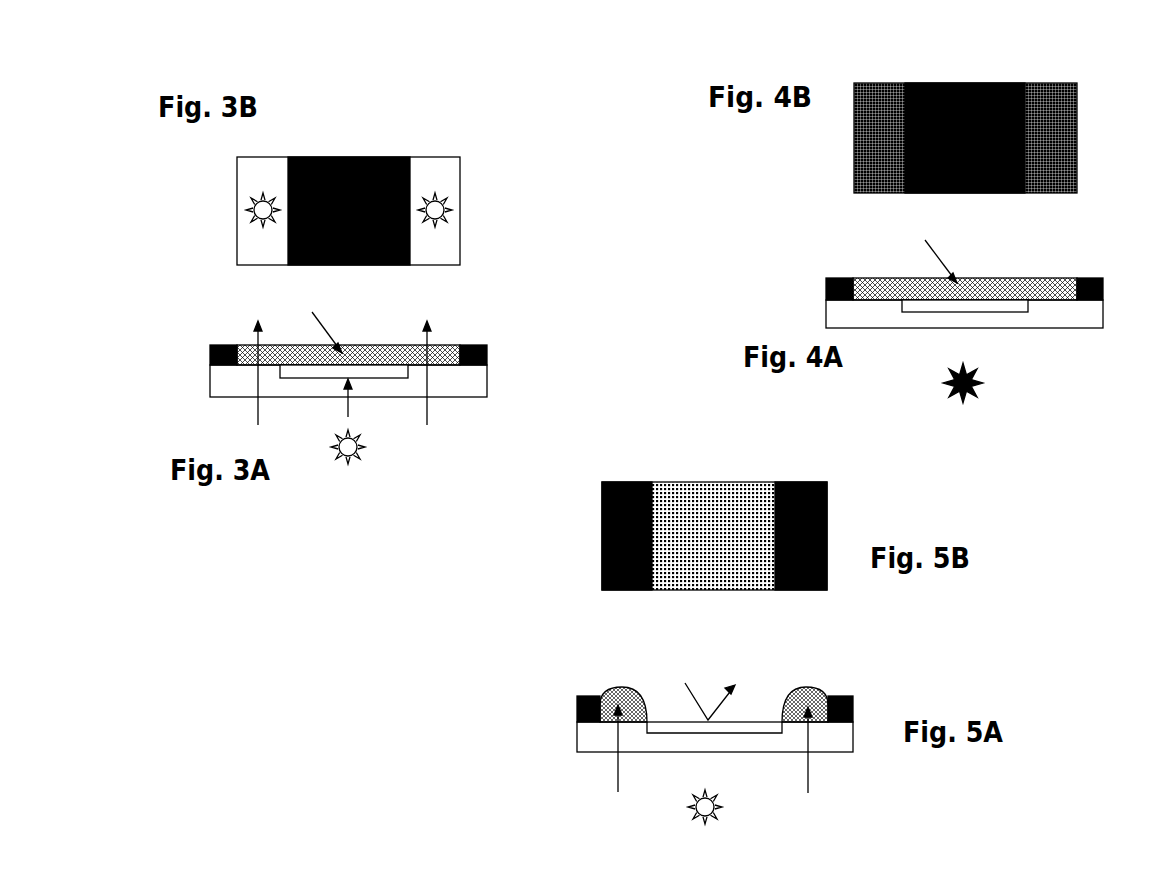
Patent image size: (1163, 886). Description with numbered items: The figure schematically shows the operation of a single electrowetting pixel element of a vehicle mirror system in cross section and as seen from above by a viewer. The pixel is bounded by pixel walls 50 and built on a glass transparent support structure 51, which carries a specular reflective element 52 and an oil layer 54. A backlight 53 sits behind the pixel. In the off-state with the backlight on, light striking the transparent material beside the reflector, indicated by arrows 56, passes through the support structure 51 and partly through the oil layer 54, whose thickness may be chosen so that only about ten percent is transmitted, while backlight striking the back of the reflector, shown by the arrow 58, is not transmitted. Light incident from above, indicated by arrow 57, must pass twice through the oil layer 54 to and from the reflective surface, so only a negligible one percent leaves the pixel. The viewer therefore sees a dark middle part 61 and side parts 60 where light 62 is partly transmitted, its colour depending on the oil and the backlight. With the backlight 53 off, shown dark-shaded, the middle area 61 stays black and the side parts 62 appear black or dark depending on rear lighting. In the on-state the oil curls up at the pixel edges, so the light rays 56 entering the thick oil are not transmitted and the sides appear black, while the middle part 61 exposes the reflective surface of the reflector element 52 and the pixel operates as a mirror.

In FIG. 3A, the pixel walls 50 is at (210, 350).
In FIG. 4A, the pixel walls 50 is at (826, 283).
In FIG. 5A, the pixel walls 50 is at (577, 715).
In FIG. 3A, the transparent support structure 51 is at (210, 386).
In FIG. 4A, the transparent support structure 51 is at (887, 329).
In FIG. 5A, the transparent support structure 51 is at (577, 753).
In FIG. 3A, the reflective element 52 is at (300, 379).
In FIG. 4A, the reflective element 52 is at (1000, 313).
In FIG. 5A, the reflective element 52 is at (714, 727).
In FIG. 3A, the backlight 53 is at (360, 460).
In FIG. 4A, the backlight 53 is at (972, 405).
In FIG. 5A, the backlight 53 is at (717, 796).
In FIG. 3A, the oil layer 54 is at (440, 348).
In FIG. 4A, the oil layer 54 is at (1050, 280).
In FIG. 5A, the oil layer 54 is at (828, 700).
In FIG. 3A, the light rays from backlight 56 is at (262, 418).
In FIG. 5A, the light rays from backlight 56 is at (617, 792).
In FIG. 3A, the light incident from above 57 is at (340, 342).
In FIG. 4A, the light incident from above 57 is at (944, 263).
In FIG. 5A, the light incident from above 57 is at (686, 683).
In FIG. 3A, the light transmitted through channel 58 is at (342, 408).
In FIG. 3B, the side parts of the pixel surface 60 is at (250, 181).
In FIG. 3B, the middle part of the pixel 61 is at (413, 172).
In FIG. 4B, the middle part of the pixel 61 is at (940, 83).
In FIG. 5B, the middle part of the pixel 61 is at (705, 497).
In FIG. 3B, the transmitted light at pixel sides 62 is at (260, 228).
In FIG. 4B, the transmitted light at pixel sides 62 is at (853, 138).
In FIG. 5B, the transmitted light at pixel sides 62 is at (827, 565).